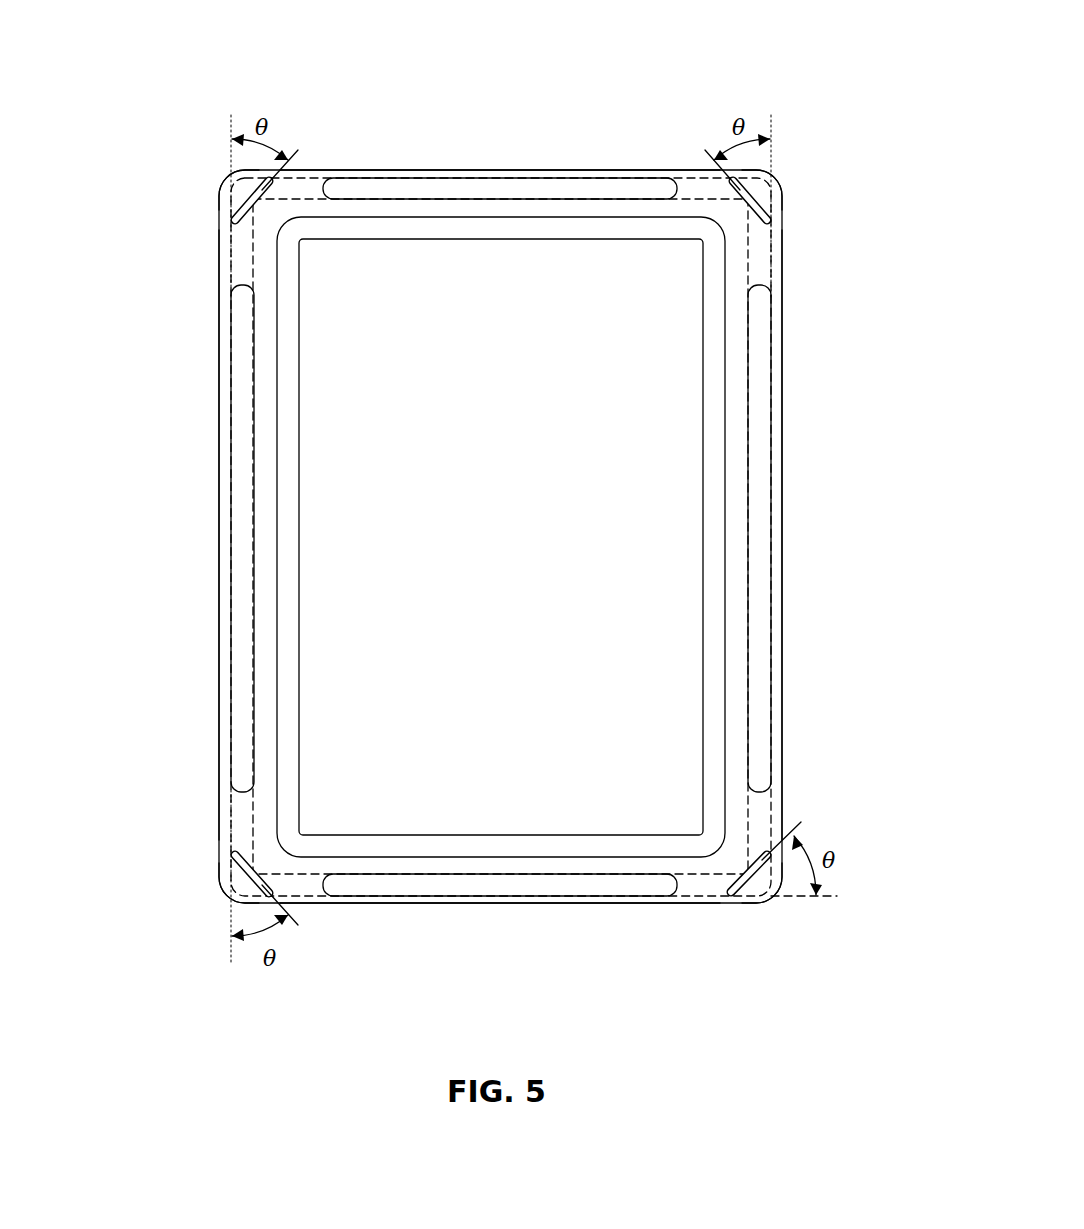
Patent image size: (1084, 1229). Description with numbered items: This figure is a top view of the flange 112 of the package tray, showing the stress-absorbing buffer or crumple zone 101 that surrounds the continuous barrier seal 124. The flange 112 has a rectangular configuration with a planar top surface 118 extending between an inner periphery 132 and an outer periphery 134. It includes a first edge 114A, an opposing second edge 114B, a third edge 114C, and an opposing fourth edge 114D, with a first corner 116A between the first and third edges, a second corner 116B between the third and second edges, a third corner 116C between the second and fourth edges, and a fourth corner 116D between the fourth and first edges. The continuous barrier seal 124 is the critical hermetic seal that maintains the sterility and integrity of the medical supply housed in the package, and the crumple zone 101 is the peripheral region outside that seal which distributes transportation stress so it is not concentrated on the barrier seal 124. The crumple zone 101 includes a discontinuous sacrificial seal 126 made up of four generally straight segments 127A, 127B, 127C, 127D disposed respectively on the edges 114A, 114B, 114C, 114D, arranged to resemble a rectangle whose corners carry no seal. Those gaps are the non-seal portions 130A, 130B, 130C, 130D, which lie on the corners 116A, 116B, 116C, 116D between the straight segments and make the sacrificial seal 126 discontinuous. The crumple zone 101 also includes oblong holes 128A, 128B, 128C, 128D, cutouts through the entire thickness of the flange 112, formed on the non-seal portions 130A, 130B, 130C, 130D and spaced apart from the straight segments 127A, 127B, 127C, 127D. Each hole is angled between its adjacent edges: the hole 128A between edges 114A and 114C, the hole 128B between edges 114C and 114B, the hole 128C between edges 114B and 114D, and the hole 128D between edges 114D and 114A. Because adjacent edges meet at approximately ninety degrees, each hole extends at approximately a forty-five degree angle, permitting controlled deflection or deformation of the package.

The flange 112 is at (199, 136).
The stress-absorbing buffer or crumple zone 101 is at (691, 163).
The planar top surface 118 is at (265, 262).
The inner periphery 132 is at (702, 392).
The outer periphery 134 is at (785, 365).
The first edge 114A is at (225, 534).
The second edge 114B is at (777, 542).
The third edge 114C is at (517, 901).
The fourth edge 114D is at (465, 169).
The first corner 116A is at (233, 885).
The second corner 116B is at (762, 900).
The third corner 116C is at (772, 172).
The fourth corner 116D is at (238, 193).
The straight segment 127A is at (237, 618).
The straight segment 127B is at (757, 480).
The straight segment 127C is at (435, 884).
The straight segment 127D is at (560, 188).
The hole 128A is at (283, 887).
The hole 128B is at (763, 850).
The hole 128C is at (760, 207).
The hole 128D is at (278, 193).
The non-seal portion 130A is at (232, 822).
The non-seal portion 130B is at (703, 890).
The non-seal portion 130C is at (758, 257).
The non-seal portion 130D is at (240, 232).
The continuous barrier seal 124 is at (268, 646).
The sacrificial seal 126 is at (228, 718).